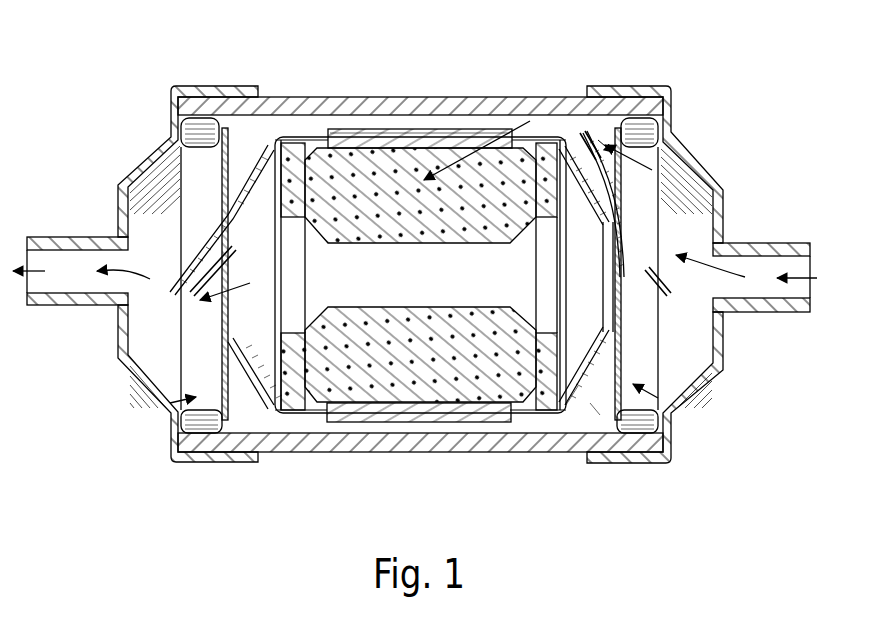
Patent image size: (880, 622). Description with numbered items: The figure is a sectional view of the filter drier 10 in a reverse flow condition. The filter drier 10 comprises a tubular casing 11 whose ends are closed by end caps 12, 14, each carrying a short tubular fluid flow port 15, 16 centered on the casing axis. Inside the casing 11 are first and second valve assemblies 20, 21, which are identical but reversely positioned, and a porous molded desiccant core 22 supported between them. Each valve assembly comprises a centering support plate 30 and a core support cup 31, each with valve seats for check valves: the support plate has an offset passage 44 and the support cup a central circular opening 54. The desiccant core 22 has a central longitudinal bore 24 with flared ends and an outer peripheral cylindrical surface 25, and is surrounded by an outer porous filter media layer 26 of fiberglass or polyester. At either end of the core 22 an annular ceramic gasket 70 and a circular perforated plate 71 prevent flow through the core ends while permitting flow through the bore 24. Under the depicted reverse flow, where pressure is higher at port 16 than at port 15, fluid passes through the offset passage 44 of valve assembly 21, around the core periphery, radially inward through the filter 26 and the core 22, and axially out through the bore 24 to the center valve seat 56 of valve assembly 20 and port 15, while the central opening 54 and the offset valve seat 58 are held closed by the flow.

The filter drier 10 is at (222, 62).
The tubular casing 11 is at (497, 97).
The end cap 12 is at (143, 158).
The end cap 14 is at (687, 150).
The fluid flow port 15 is at (118, 237).
The fluid flow port 16 is at (758, 243).
The first valve assembly 20 is at (178, 400).
The second valve assembly 21 is at (664, 402).
The molded desiccant core 22 is at (390, 385).
The central longitudinal bore 24 is at (382, 306).
The outer peripheral cylindrical surface 25 is at (443, 147).
The outer porous filter media layer 26 is at (385, 130).
The centering support plate 30 is at (578, 388).
The core support cup 31 is at (590, 403).
The offset passage 44 is at (623, 178).
The central circular opening 54 is at (611, 292).
The center valve seat 56 is at (218, 302).
The offset valve seat 58 is at (181, 124).
The annular ceramic gasket 70 is at (282, 138).
The circular perforated plate 71 is at (271, 188).